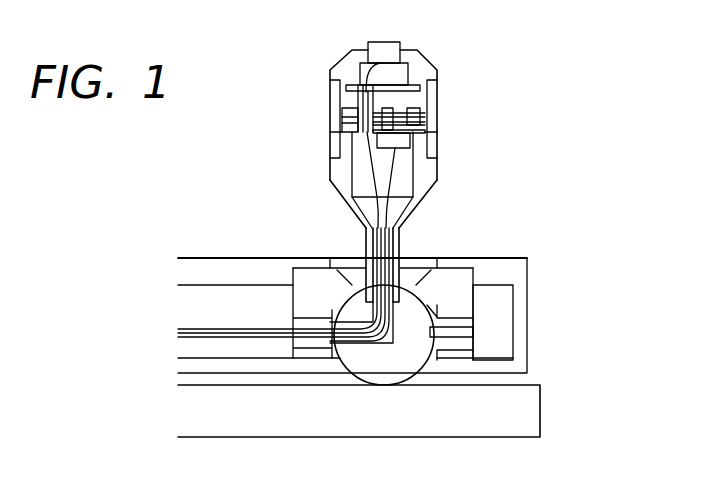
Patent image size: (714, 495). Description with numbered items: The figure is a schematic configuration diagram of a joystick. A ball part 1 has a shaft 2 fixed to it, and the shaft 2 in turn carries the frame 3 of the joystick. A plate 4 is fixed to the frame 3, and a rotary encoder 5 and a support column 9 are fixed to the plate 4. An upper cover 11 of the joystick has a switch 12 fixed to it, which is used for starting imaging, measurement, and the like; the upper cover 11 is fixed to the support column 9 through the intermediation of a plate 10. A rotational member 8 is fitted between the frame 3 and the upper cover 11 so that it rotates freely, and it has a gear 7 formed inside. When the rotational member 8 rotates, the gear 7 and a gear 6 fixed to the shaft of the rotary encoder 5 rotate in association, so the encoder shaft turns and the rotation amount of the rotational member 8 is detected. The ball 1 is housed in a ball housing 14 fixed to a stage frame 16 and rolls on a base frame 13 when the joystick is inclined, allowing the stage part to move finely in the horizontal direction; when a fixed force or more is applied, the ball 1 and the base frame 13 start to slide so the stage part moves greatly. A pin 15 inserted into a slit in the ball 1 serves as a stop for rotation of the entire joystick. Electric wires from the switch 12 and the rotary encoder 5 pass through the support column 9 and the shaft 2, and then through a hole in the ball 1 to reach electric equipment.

The ball part 1 is at (380, 384).
The shaft 2 is at (399, 257).
The frame 3 is at (422, 200).
The plate 4 is at (423, 131).
The rotary encoder 5 is at (403, 146).
The gear 6 is at (393, 108).
The gear 7 is at (419, 118).
The rotational member 8 is at (334, 133).
The support column 9 is at (355, 102).
The plate 10 is at (387, 80).
The upper cover 11 is at (350, 58).
The switch 12 is at (387, 42).
The base frame 13 is at (540, 407).
The ball housing 14 is at (315, 275).
The pin 15 is at (470, 332).
The stage frame 16 is at (195, 362).